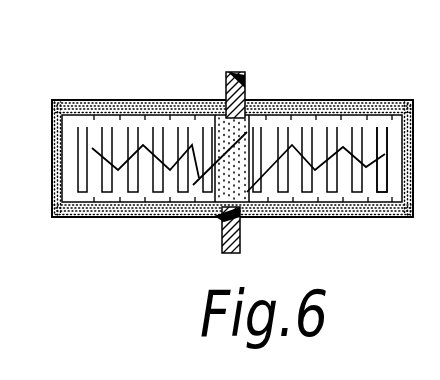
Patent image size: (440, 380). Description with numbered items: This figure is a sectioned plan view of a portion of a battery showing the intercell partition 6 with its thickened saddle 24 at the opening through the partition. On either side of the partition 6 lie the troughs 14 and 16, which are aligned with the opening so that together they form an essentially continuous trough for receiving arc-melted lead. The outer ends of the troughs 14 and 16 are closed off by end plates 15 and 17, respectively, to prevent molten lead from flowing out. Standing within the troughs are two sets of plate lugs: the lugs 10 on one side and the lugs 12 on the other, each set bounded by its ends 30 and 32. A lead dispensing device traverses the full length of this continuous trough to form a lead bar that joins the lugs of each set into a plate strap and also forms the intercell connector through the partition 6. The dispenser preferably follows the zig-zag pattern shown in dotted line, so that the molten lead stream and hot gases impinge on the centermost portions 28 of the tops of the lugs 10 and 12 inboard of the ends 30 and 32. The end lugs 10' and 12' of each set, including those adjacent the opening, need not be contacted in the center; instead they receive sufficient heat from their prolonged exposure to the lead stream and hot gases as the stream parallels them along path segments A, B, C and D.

The partition 6 is at (226, 75).
The lugs 10 is at (137, 130).
The end lugs 10' is at (116, 129).
The lugs 12 is at (307, 187).
The end lugs 12' is at (393, 186).
The trough 14 is at (110, 113).
The end plate 15 is at (55, 217).
The trough 16 is at (316, 113).
The end plate 17 is at (394, 147).
The thickened saddle 24 is at (228, 192).
The centermost portions 28 is at (93, 150).
The end 30 is at (77, 153).
The end 32 is at (405, 124).
The path segment A is at (81, 147).
The path segment B is at (243, 105).
The path segment C is at (258, 140).
The path segment D is at (383, 127).